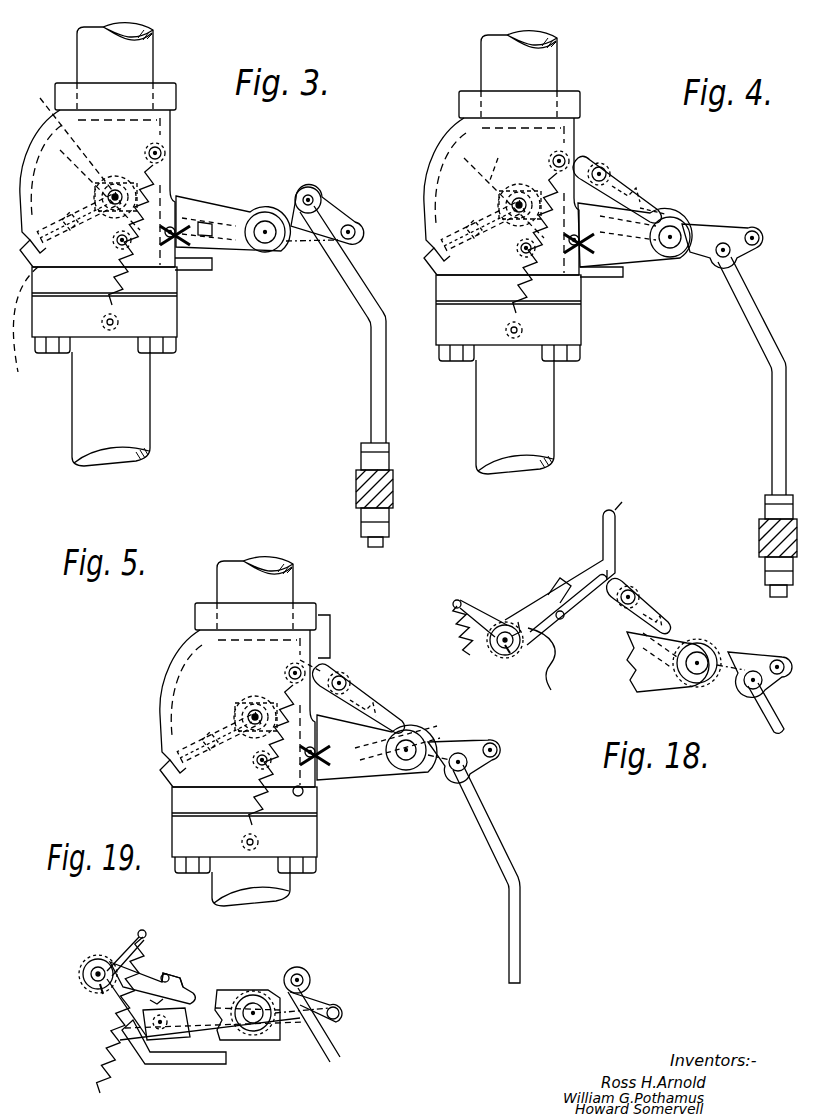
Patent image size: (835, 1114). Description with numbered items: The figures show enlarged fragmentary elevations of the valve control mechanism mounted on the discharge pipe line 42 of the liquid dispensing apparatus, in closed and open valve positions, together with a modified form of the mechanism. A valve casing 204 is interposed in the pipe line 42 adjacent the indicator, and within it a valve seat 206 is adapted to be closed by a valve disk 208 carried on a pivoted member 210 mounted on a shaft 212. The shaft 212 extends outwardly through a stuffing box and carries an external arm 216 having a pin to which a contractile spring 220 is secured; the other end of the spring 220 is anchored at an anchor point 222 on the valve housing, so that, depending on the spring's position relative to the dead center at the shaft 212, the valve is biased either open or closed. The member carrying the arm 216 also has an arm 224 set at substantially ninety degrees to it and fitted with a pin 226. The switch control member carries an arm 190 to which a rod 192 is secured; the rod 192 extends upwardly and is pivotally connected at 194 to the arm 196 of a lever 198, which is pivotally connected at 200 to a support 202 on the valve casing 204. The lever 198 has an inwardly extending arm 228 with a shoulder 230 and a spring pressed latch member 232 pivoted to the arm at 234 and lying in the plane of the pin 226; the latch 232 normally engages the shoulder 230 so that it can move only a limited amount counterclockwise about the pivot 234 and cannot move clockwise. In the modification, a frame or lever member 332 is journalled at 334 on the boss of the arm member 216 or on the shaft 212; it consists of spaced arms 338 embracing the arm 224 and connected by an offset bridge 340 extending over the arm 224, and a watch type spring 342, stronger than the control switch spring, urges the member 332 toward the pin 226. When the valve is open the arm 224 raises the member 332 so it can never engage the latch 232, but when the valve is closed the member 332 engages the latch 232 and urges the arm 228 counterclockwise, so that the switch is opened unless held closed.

In FIG. 3, the pipe line 42 is at (132, 397).
In FIG. 4, the pipe line 42 is at (534, 252).
In FIG. 5, the pipe line 42 is at (252, 731).
In FIG. 3, the arm 190 is at (383, 490).
In FIG. 4, the arm 190 is at (768, 538).
In FIG. 3, the rod 192 is at (372, 384).
In FIG. 4, the rod 192 is at (782, 446).
In FIG. 5, the rod 192 is at (512, 864).
In FIG. 18, the rod 192 is at (768, 713).
In FIG. 19, the rod 192 is at (314, 1025).
In FIG. 4, the pivotal connection 194 is at (727, 245).
In FIG. 3, the arm 196 is at (303, 188).
In FIG. 4, the arm 196 is at (707, 226).
In FIG. 5, the arm 196 is at (444, 755).
In FIG. 18, the arm 196 is at (733, 664).
In FIG. 19, the arm 196 is at (277, 985).
In FIG. 4, the lever 198 is at (658, 210).
In FIG. 4, the pivot 200 is at (671, 242).
In FIG. 5, the pivot 200 is at (409, 758).
In FIG. 18, the pivot 200 is at (697, 669).
In FIG. 19, the pivot 200 is at (257, 1020).
In FIG. 3, the support 202 is at (197, 203).
In FIG. 4, the support 202 is at (618, 272).
In FIG. 5, the support 202 is at (355, 747).
In FIG. 18, the support 202 is at (648, 678).
In FIG. 19, the support 202 is at (228, 997).
In FIG. 3, the valve casing 204 is at (35, 160).
In FIG. 4, the valve casing 204 is at (494, 226).
In FIG. 5, the valve casing 204 is at (218, 738).
In FIG. 3, the valve seat 206 is at (100, 196).
In FIG. 4, the valve seat 206 is at (461, 210).
In FIG. 5, the valve seat 206 is at (191, 717).
In FIG. 3, the valve disk 208 is at (26, 329).
In FIG. 3, the pivoted member 210 is at (76, 246).
In FIG. 4, the pivoted member 210 is at (451, 219).
In FIG. 5, the pivoted member 210 is at (272, 758).
In FIG. 3, the shaft 212 is at (78, 153).
In FIG. 4, the shaft 212 is at (504, 188).
In FIG. 18, the shaft 212 is at (508, 656).
In FIG. 19, the shaft 212 is at (88, 986).
In FIG. 3, the external arm 216 is at (162, 146).
In FIG. 4, the external arm 216 is at (577, 118).
In FIG. 5, the external arm 216 is at (221, 655).
In FIG. 18, the external arm 216 is at (459, 602).
In FIG. 19, the external arm 216 is at (120, 950).
In FIG. 3, the contractile spring 220 is at (155, 296).
In FIG. 4, the contractile spring 220 is at (514, 243).
In FIG. 5, the contractile spring 220 is at (200, 755).
In FIG. 18, the contractile spring 220 is at (460, 641).
In FIG. 19, the contractile spring 220 is at (103, 1053).
In FIG. 5, the anchor point 222 is at (307, 835).
In FIG. 3, the arm 224 is at (212, 272).
In FIG. 4, the arm 224 is at (616, 278).
In FIG. 5, the arm 224 is at (320, 648).
In FIG. 18, the arm 224 is at (610, 506).
In FIG. 19, the arm 224 is at (230, 1062).
In FIG. 5, the pin 226 is at (310, 673).
In FIG. 18, the pin 226 is at (528, 630).
In FIG. 19, the pin 226 is at (118, 1025).
In FIG. 3, the inwardly extending arm 228 is at (232, 228).
In FIG. 4, the inwardly extending arm 228 is at (652, 212).
In FIG. 5, the inwardly extending arm 228 is at (382, 723).
In FIG. 18, the inwardly extending arm 228 is at (665, 623).
In FIG. 19, the inwardly extending arm 228 is at (205, 1015).
In FIG. 4, the shoulder 230 is at (639, 196).
In FIG. 5, the shoulder 230 is at (374, 708).
In FIG. 4, the spring pressed latch member 232 is at (594, 160).
In FIG. 5, the spring pressed latch member 232 is at (350, 676).
In FIG. 18, the spring pressed latch member 232 is at (617, 584).
In FIG. 19, the spring pressed latch member 232 is at (143, 1032).
In FIG. 4, the pivot 234 is at (604, 165).
In FIG. 5, the pivot 234 is at (360, 683).
In FIG. 18, the pivot 234 is at (639, 592).
In FIG. 19, the pivot 234 is at (183, 1047).
In FIG. 18, the frame or lever member 332 is at (541, 612).
In FIG. 19, the frame or lever member 332 is at (162, 973).
In FIG. 18, the journal 334 is at (502, 648).
In FIG. 19, the journal 334 is at (88, 966).
In FIG. 18, the spaced arms 338 is at (551, 672).
In FIG. 19, the spaced arms 338 is at (168, 976).
In FIG. 18, the offset bridge 340 is at (565, 578).
In FIG. 19, the offset bridge 340 is at (186, 980).
In FIG. 18, the watch type spring 342 is at (512, 622).
In FIG. 19, the watch type spring 342 is at (103, 966).